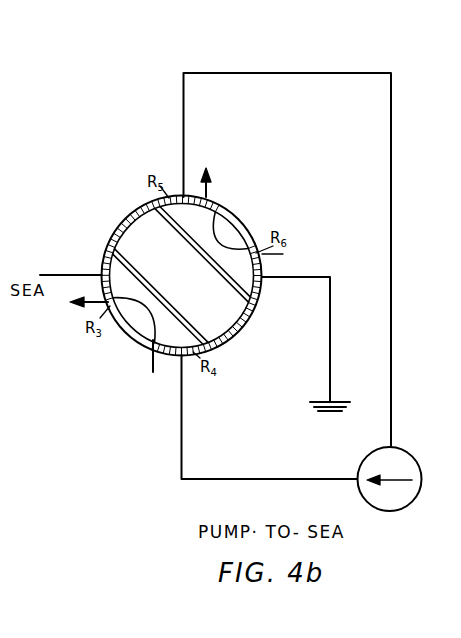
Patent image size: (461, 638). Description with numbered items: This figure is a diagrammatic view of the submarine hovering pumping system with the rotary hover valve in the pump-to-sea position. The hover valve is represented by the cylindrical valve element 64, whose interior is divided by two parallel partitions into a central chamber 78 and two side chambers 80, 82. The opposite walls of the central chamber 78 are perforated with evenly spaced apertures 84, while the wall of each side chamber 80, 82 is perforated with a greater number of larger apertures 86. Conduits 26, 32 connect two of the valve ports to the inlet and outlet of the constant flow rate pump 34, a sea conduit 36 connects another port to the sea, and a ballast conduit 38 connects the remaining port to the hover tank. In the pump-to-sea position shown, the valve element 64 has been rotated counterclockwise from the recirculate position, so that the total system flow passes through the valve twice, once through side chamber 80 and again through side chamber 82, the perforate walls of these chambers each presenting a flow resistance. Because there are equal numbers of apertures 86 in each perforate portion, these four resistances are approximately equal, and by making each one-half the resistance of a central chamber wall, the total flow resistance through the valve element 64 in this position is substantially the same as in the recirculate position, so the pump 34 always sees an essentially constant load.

The conduit 26 is at (391, 92).
The conduit 32 is at (262, 479).
The constant flow rate pump 34 is at (416, 461).
The sea conduit 36 is at (76, 275).
The ballast conduit 38 is at (330, 331).
The cylindrical valve element 64 is at (246, 184).
The central chamber 78 is at (181, 275).
The side chamber 80 is at (134, 312).
The side chamber 82 is at (215, 230).
The apertures 84 is at (104, 221).
The apertures 86 is at (197, 198).